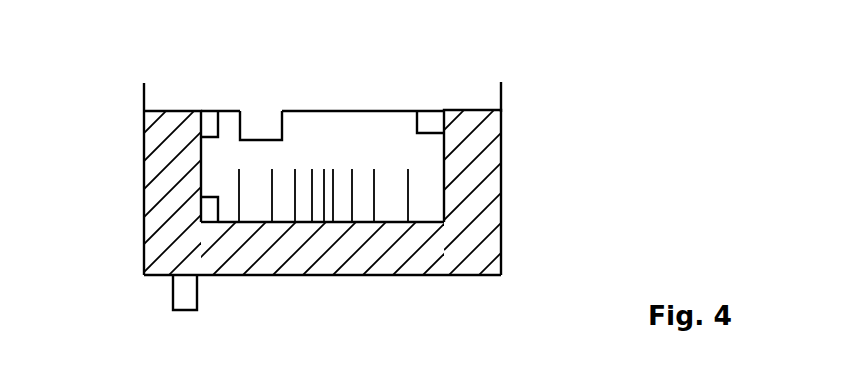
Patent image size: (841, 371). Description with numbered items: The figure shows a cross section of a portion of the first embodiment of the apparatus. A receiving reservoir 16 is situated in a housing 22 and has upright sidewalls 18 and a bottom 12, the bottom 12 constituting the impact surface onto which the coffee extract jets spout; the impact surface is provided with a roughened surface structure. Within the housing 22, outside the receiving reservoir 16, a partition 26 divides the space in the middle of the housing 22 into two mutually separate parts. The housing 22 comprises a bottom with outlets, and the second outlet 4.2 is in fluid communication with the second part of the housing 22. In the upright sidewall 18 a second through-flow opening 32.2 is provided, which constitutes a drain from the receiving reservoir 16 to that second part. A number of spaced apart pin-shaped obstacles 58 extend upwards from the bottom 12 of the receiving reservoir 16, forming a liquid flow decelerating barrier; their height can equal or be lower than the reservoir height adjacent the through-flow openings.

The bottom 12 is at (201, 198).
The upright sidewall 18 is at (218, 137).
The second through-flow opening 32.2 is at (261, 125).
The receiving reservoir 16 is at (417, 111).
The partition 26 is at (473, 152).
The obstacles 58 is at (408, 191).
The housing 22 is at (501, 229).
The second outlet 4.2 is at (173, 292).